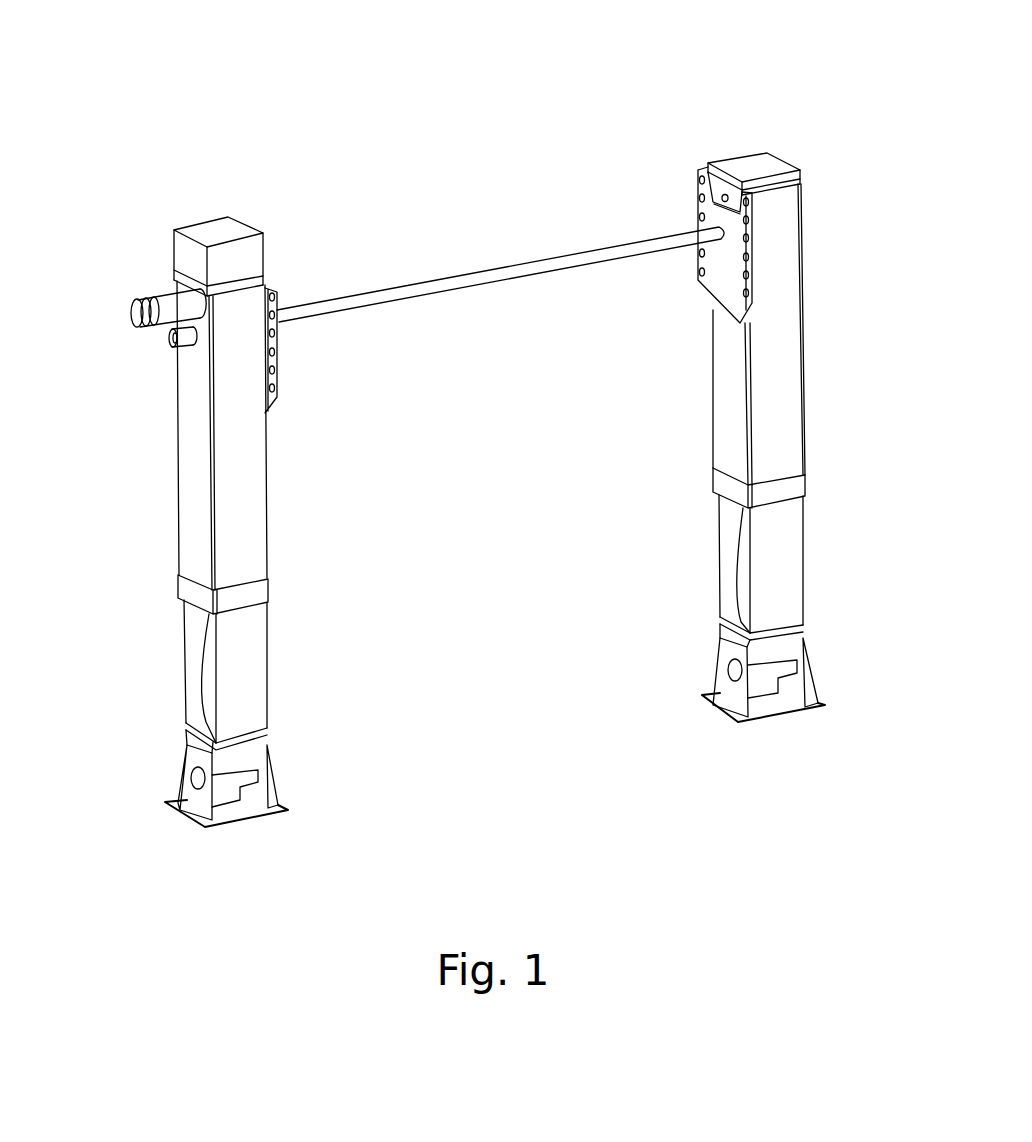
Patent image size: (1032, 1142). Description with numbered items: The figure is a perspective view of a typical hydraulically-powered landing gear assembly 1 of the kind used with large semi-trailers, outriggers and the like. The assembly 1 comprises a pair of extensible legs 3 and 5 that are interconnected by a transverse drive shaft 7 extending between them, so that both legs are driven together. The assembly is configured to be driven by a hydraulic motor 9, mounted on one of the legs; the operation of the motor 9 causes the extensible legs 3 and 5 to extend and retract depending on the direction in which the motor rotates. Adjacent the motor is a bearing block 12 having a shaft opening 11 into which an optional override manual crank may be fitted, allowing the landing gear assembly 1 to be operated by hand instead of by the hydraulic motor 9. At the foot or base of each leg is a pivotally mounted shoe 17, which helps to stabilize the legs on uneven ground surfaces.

The landing gear assembly 1 is at (713, 105).
The extensible leg 3 is at (150, 634).
The extensible leg 5 is at (842, 383).
The transverse drive shaft 7 is at (402, 293).
The hydraulic motor 9 is at (143, 330).
The shaft opening 11 is at (168, 343).
The bearing block 12 is at (182, 345).
The shoe 17 is at (270, 807).